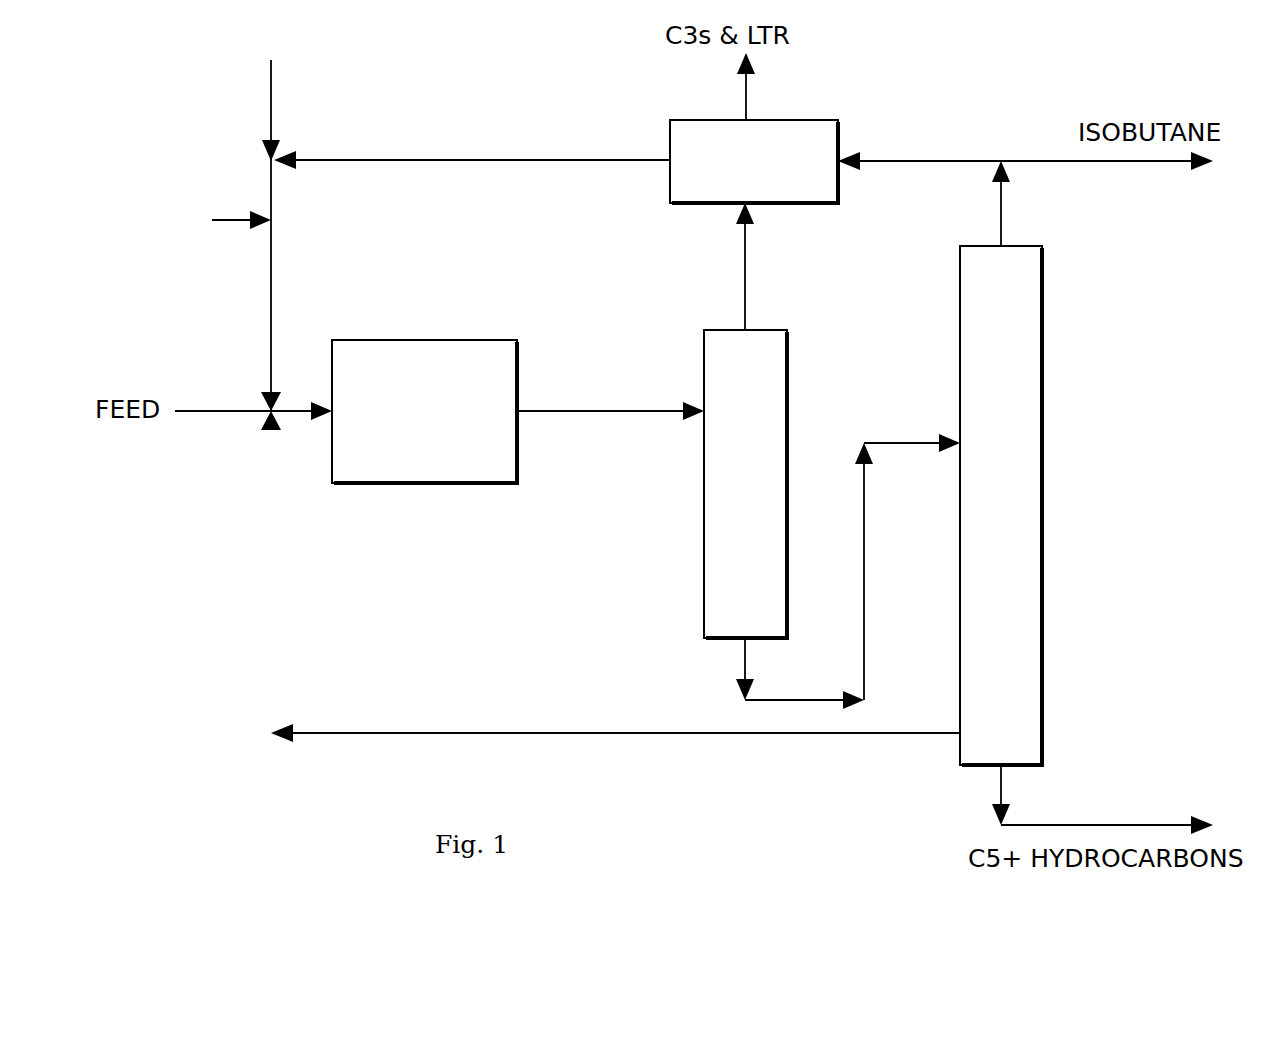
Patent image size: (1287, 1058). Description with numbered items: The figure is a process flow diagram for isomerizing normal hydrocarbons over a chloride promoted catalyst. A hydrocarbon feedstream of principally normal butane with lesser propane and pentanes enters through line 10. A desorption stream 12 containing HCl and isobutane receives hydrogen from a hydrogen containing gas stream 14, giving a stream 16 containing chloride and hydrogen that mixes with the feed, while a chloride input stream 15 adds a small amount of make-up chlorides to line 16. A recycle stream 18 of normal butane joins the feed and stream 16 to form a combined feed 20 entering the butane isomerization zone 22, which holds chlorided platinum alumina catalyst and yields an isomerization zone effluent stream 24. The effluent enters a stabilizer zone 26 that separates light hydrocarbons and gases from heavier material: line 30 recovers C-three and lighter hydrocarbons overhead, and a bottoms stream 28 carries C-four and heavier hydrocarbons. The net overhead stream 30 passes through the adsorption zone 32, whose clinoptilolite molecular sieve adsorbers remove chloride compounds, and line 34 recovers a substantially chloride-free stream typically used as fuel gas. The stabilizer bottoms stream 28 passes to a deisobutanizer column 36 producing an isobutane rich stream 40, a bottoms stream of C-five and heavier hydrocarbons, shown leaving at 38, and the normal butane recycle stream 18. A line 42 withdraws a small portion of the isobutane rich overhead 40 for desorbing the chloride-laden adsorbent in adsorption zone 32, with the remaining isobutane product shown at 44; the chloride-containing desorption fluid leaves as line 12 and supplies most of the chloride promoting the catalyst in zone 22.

The line 10 is at (222, 411).
The desorption stream 12 is at (474, 160).
The hydrogen containing gas stream 14 is at (272, 108).
The chloride input stream 15 is at (228, 220).
The stream containing chloride and hydrogen 16 is at (272, 198).
The recycle stream 18 is at (412, 733).
The combined feed 20 is at (292, 414).
The butane isomerization zone 22 is at (428, 431).
The isomerization zone effluent stream 24 is at (589, 412).
The stabilizer zone 26 is at (788, 384).
The bottoms stream 28 is at (814, 700).
The line 30 is at (746, 276).
The adsorption zone 32 is at (763, 173).
The line 34 is at (747, 93).
The deisobutanizer column 36 is at (1018, 492).
The C5+ hydrocarbons bottoms line 38 is at (1068, 825).
The isobutane rich stream 40 is at (1002, 218).
The line 42 is at (890, 161).
The isobutane product line 44 is at (1095, 163).